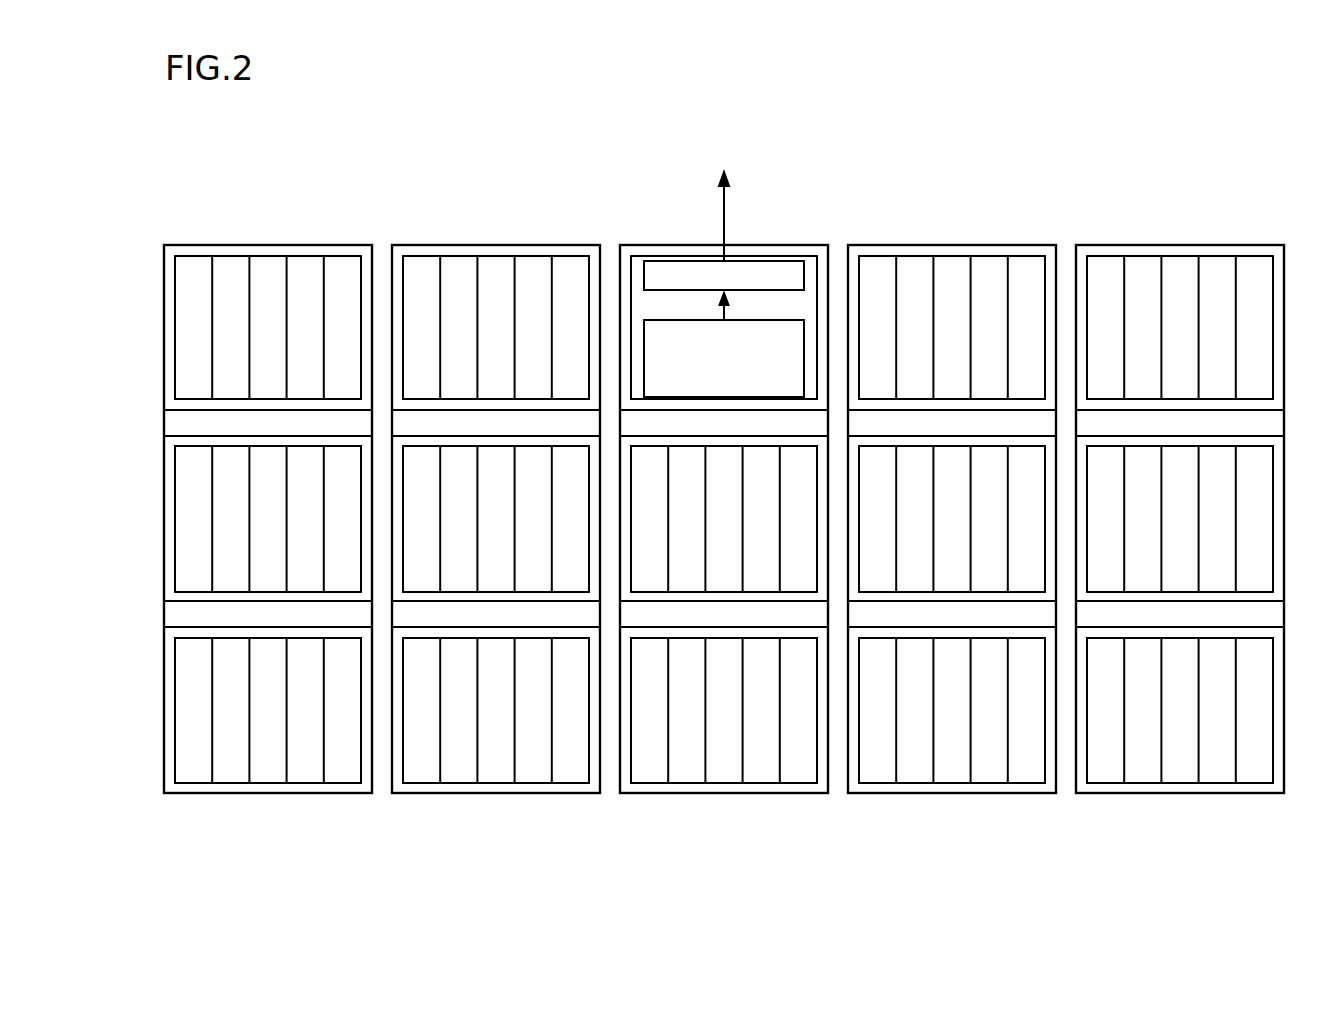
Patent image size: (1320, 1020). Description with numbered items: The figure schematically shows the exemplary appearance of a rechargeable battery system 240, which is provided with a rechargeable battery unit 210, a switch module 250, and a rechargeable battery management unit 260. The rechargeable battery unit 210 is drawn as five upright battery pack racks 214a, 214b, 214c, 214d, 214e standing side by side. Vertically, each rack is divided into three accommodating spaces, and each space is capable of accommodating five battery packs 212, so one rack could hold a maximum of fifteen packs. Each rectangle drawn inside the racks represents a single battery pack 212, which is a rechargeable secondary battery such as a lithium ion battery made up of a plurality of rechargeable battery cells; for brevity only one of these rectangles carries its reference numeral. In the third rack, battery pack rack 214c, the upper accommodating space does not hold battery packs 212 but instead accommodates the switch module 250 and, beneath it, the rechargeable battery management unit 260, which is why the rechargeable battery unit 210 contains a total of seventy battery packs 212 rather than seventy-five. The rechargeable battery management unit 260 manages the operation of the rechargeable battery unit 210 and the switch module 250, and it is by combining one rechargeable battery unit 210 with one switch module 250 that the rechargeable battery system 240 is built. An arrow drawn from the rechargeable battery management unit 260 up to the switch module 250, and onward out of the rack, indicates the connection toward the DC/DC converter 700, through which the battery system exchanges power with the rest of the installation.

The rechargeable battery system 240 is at (757, 74).
The rechargeable battery unit 210 is at (981, 199).
The battery pack 212 is at (1250, 277).
The battery pack rack 214a is at (325, 793).
The battery pack rack 214b is at (553, 793).
The battery pack rack 214c is at (781, 793).
The battery pack rack 214d is at (1009, 793).
The battery pack rack 214e is at (1237, 793).
The switch module 250 is at (783, 260).
The rechargeable battery management unit 260 is at (748, 317).
The DC/DC converter 700 is at (725, 202).